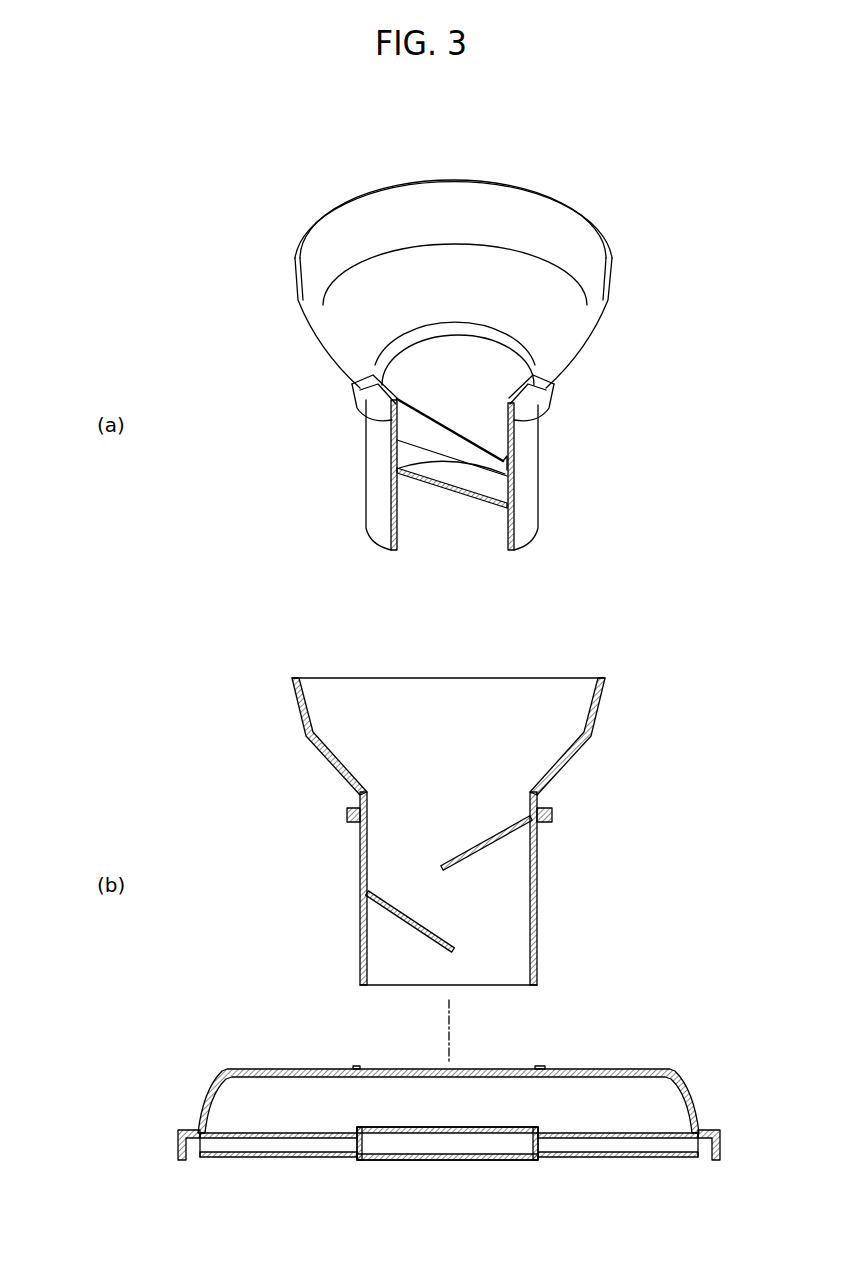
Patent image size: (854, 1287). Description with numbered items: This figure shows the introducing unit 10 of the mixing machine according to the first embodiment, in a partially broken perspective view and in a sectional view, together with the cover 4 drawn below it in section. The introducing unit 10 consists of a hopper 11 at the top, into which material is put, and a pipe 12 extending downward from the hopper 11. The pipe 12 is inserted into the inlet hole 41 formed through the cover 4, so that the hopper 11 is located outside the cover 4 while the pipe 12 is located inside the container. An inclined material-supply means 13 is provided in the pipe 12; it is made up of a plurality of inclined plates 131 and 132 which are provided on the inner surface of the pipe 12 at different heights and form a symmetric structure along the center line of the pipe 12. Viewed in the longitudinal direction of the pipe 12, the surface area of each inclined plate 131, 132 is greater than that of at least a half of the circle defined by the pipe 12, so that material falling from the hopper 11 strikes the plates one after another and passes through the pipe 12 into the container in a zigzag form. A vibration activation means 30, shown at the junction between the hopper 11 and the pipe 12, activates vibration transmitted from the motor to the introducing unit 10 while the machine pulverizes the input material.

The introducing unit 10 is at (288, 250).
The hopper 11 is at (600, 322).
The pipe 12 is at (540, 470).
The inclined material-supply means 13 is at (460, 512).
The inclined plate 131 is at (466, 431).
The inclined plate 132 is at (447, 480).
The vibration activation means 30 is at (552, 812).
The cover 4 is at (198, 1083).
The inlet hole 41 is at (382, 1069).